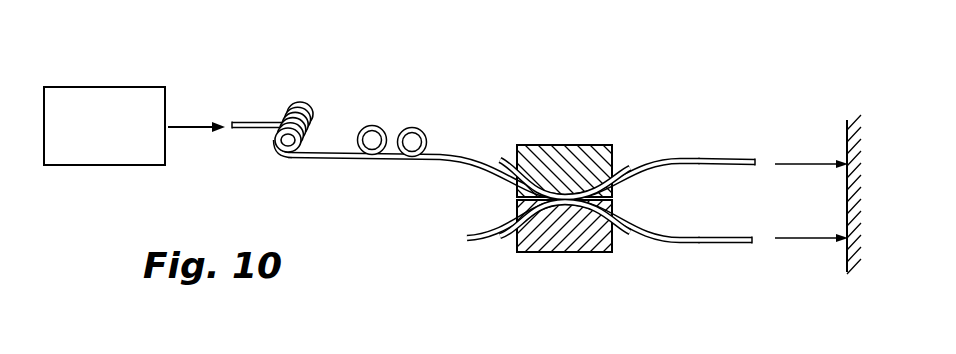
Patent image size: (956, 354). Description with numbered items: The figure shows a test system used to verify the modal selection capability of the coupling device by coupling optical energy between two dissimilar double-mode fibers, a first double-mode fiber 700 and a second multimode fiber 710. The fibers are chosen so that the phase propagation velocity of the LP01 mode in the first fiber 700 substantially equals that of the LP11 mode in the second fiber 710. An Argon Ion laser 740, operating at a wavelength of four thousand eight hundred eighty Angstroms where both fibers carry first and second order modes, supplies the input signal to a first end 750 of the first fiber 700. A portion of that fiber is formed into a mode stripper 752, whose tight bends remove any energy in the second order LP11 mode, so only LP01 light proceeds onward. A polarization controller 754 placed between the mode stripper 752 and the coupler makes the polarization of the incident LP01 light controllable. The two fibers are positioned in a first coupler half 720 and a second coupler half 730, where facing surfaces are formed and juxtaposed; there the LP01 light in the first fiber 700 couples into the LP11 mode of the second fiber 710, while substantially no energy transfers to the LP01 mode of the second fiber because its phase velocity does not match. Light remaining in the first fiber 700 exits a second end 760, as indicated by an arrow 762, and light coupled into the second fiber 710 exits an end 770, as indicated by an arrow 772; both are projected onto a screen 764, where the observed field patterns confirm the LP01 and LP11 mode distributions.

The first double-mode fiber 700 is at (330, 159).
The second multimode fiber 710 is at (678, 234).
The first coupler half 720 is at (561, 145).
The second coupler half 730 is at (562, 252).
The Argon Ion laser 740 is at (100, 91).
The first end 750 is at (246, 121).
The mode stripper 752 is at (310, 110).
The polarization controller 754 is at (381, 129).
The second end 760 is at (752, 158).
The arrow 762 is at (803, 162).
The screen 764 is at (848, 270).
The end 770 is at (748, 246).
The arrow 772 is at (790, 236).